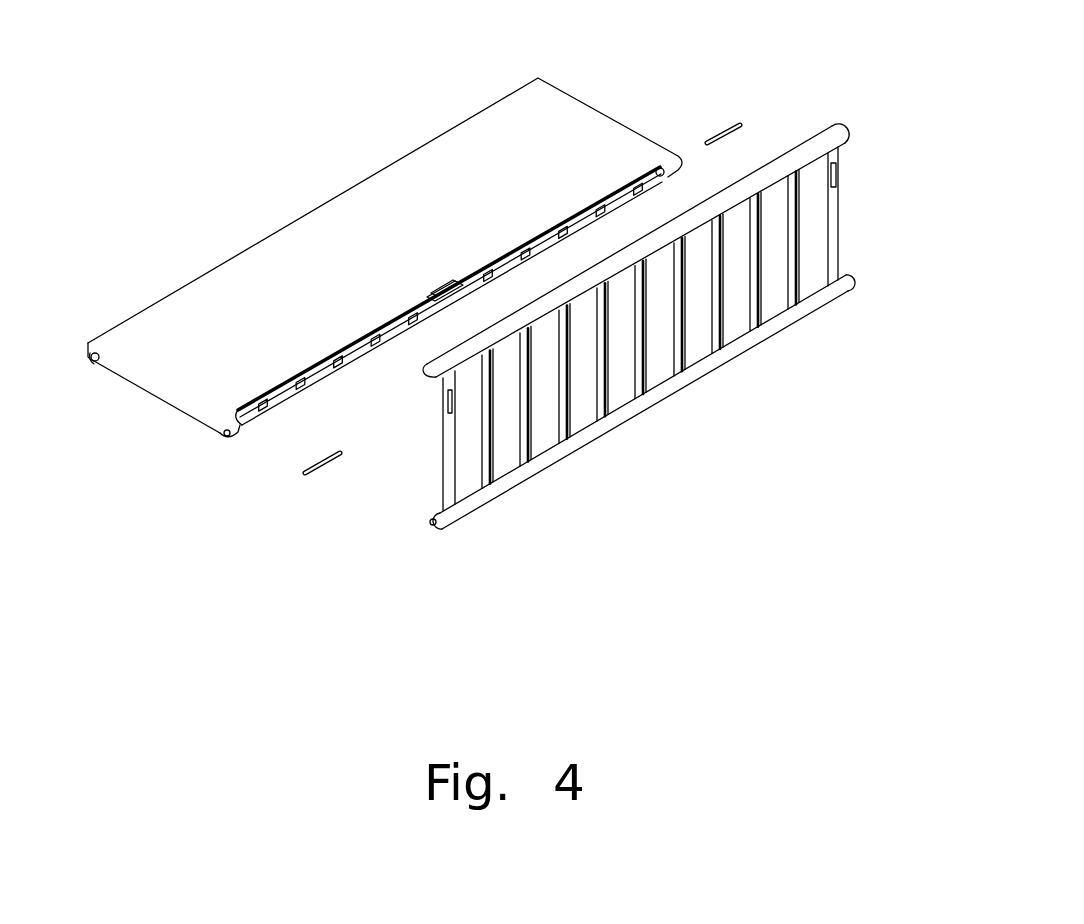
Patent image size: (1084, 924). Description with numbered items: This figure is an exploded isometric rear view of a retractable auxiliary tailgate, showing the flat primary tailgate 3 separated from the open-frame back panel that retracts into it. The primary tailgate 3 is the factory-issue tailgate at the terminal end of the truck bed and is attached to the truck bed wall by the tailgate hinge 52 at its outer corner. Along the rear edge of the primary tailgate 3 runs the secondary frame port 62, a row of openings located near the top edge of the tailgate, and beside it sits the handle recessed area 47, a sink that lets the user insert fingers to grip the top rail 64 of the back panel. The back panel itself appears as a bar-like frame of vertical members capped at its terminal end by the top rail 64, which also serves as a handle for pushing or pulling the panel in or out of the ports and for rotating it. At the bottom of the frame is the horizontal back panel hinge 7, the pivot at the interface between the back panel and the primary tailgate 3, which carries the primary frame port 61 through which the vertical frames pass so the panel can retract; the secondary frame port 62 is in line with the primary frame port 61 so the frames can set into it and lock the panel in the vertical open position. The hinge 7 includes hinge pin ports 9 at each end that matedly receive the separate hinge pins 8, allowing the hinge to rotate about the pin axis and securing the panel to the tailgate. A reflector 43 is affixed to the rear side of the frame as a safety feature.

The primary tailgate 3 is at (162, 298).
The horizontal back panel hinge 7 is at (683, 295).
The hinge pin 8 is at (727, 125).
The hinge pin port 9 is at (220, 432).
The reflector 43 is at (837, 177).
The handle recessed area 47 is at (437, 290).
The tailgate hinge 52 is at (93, 363).
The primary frame port 61 is at (498, 487).
The secondary frame port 62 is at (567, 213).
The top rail 64 is at (827, 135).